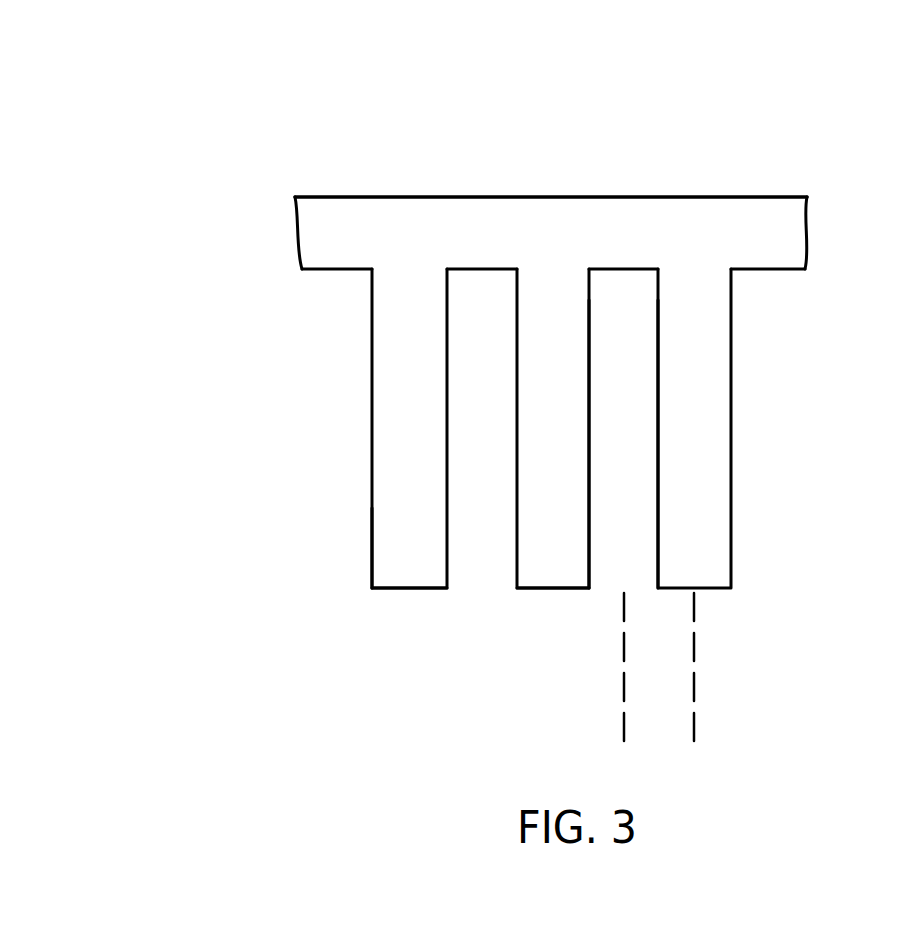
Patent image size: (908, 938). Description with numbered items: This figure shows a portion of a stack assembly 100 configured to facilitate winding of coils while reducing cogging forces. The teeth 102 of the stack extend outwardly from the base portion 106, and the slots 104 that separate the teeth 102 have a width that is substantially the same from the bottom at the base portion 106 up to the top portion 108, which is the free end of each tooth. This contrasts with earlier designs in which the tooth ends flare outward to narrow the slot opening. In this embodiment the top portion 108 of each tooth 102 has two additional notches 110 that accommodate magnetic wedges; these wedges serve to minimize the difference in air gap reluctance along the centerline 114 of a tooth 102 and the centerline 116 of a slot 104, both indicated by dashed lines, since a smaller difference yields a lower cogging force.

The stack assembly 100 is at (782, 56).
The teeth 102 is at (697, 450).
The slots 104 is at (648, 349).
The base portion 106 is at (762, 217).
The top portion 108 is at (302, 508).
The notches 110 is at (367, 573).
The centerline of a tooth 114 is at (698, 713).
The centerline of a slot 116 is at (620, 710).